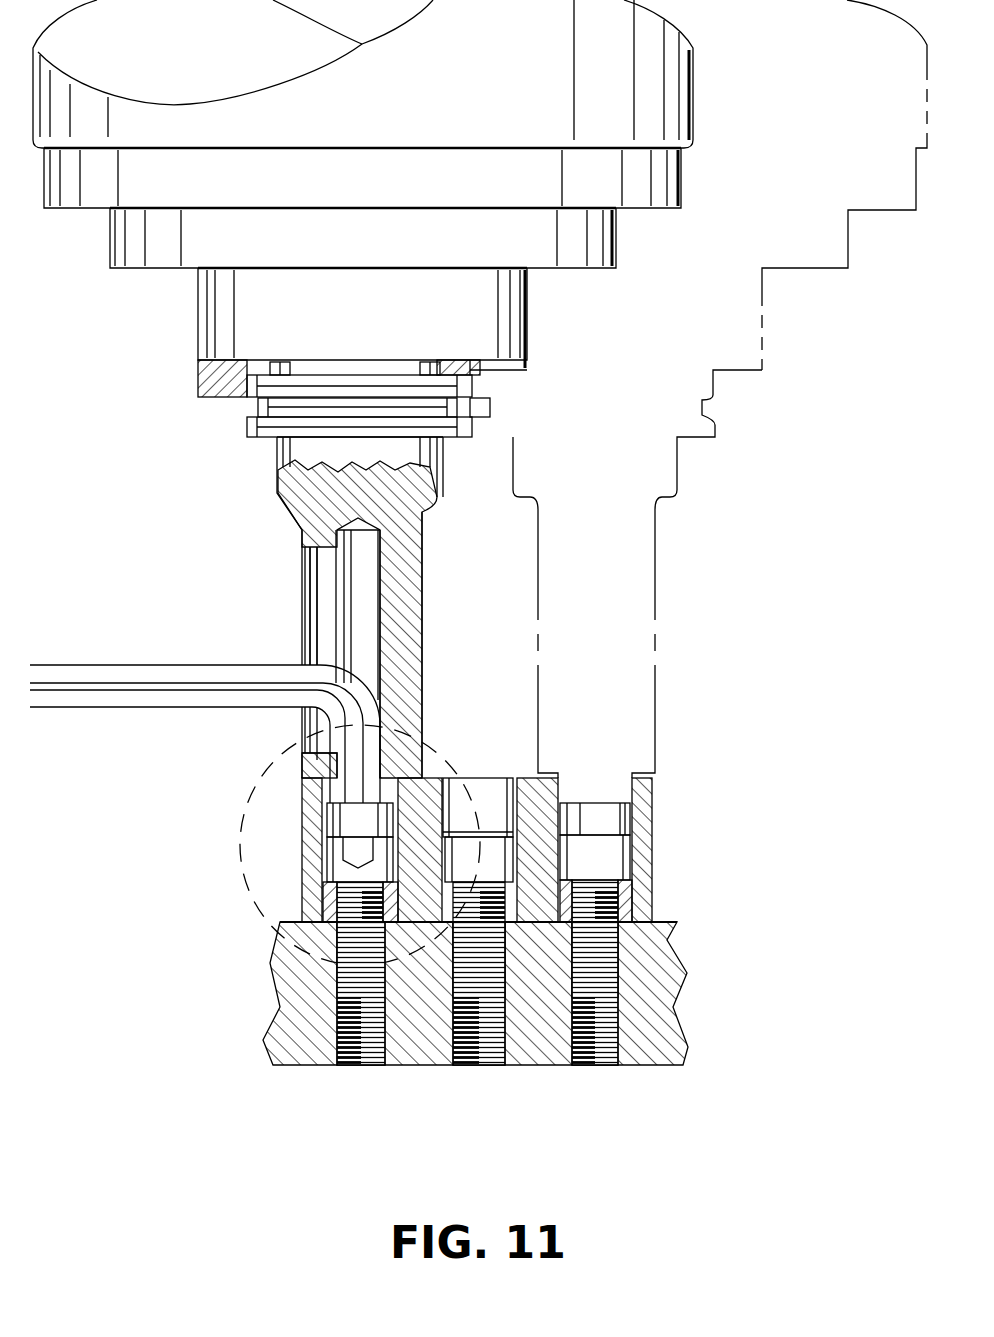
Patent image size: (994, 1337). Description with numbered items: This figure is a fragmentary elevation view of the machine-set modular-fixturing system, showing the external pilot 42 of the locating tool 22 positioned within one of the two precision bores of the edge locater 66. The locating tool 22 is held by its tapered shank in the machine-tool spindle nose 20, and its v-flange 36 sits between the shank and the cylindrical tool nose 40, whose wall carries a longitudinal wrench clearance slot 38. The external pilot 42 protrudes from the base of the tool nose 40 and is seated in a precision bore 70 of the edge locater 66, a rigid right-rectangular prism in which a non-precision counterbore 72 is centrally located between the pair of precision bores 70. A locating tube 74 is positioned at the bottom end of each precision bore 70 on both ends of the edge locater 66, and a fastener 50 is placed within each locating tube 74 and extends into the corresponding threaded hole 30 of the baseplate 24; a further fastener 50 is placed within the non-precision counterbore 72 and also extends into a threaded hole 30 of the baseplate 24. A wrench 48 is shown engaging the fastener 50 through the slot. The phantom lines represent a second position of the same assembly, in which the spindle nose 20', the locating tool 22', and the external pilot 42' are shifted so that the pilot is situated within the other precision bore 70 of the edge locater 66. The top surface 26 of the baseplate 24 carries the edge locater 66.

The machine-tool spindle nose 20 is at (363, 198).
The machine-tool spindle nose (alternate position) 20' is at (802, 245).
The locating tool 22 is at (385, 607).
The locating tool (alternate position) 22' is at (691, 634).
The baseplate 24 is at (688, 1005).
The top surface of base plate 26 is at (670, 922).
The threaded hole 30 is at (365, 1065).
The v-flange 36 is at (255, 405).
The wrench clearance slot 38 is at (313, 643).
The tool nose 40 is at (410, 643).
The external pilot 42 is at (262, 830).
The external pilot (alternate position) 42' is at (689, 839).
The wrench 48 is at (135, 672).
The fastener 50 is at (325, 868).
The edge locater 66 is at (293, 843).
The precision bore 70 is at (302, 817).
The non-precision counterbore 72 is at (500, 778).
The locating tube 74 is at (315, 902).